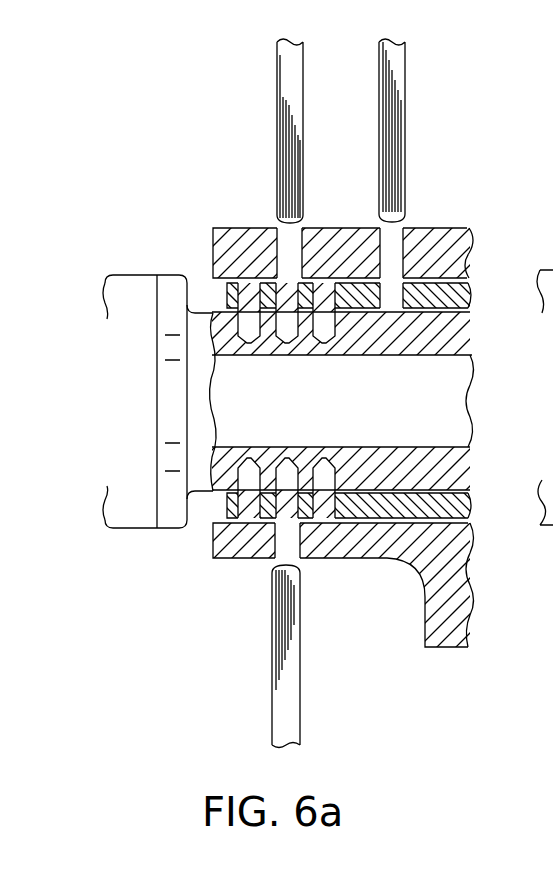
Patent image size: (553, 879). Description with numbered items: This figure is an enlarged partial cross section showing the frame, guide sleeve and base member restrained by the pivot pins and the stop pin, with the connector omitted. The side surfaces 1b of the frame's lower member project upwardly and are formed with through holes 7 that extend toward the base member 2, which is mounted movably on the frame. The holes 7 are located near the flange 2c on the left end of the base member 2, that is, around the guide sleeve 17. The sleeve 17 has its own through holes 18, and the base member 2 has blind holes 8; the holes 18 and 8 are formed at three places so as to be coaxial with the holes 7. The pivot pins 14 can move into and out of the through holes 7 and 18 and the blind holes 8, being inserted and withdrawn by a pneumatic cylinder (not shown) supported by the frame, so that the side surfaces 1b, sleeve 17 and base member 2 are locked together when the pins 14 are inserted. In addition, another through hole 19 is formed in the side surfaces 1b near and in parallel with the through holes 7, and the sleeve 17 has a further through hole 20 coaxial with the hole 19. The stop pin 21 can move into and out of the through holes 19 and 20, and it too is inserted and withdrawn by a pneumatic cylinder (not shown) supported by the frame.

The side surfaces 1b is at (233, 243).
The base member 2 is at (200, 405).
The flange 2c is at (172, 305).
The through holes 7 is at (300, 248).
The blind holes 8 is at (323, 332).
The pivot pins 14 is at (287, 75).
The guide sleeve 17 is at (423, 296).
The through holes 18 is at (290, 292).
The through hole 19 is at (390, 248).
The through hole 20 is at (385, 298).
The stop pin 21 is at (404, 82).